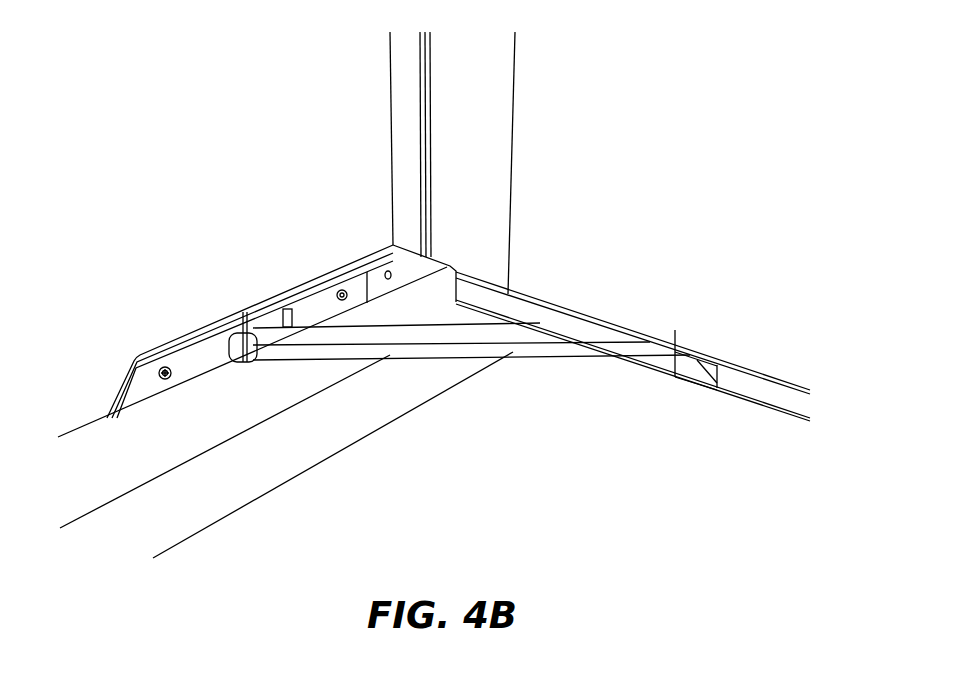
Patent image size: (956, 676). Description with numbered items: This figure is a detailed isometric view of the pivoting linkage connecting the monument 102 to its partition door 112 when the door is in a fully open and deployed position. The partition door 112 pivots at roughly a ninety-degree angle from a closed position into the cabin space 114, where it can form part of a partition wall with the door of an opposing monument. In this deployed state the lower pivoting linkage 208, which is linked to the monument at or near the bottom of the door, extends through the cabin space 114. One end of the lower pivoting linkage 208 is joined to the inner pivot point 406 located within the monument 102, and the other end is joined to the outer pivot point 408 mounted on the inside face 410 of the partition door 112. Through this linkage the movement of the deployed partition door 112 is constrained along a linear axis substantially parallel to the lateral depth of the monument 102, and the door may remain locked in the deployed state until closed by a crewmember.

The monument 102 is at (165, 158).
The partition door 112 is at (730, 322).
The cabin space 114 is at (575, 490).
The lower pivoting linkage 208 is at (513, 343).
The inner pivot point 406 is at (242, 312).
The outer pivot point 408 is at (680, 365).
The inside face 410 is at (665, 190).